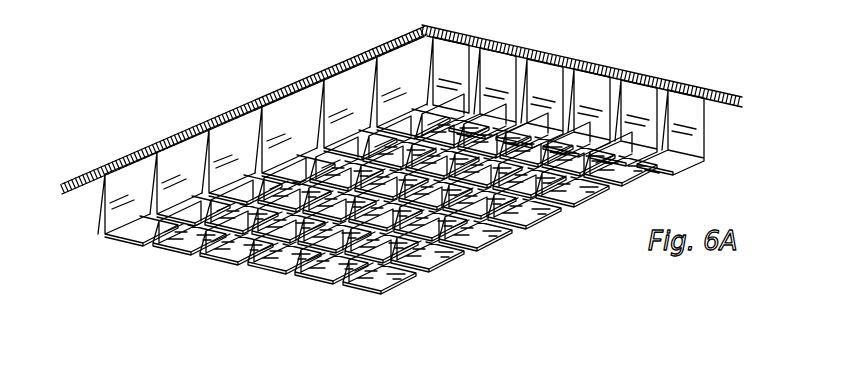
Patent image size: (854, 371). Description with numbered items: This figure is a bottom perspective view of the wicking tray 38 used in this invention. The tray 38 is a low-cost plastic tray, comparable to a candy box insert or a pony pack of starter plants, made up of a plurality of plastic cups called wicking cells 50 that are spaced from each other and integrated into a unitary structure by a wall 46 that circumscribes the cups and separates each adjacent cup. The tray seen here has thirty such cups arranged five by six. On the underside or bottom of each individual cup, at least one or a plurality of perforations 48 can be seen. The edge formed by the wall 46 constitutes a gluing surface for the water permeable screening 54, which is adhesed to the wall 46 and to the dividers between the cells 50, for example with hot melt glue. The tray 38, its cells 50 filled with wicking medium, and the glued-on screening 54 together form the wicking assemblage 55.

The wicking tray 38 is at (394, 157).
The wall 46 is at (241, 133).
The perforations 48 is at (219, 256).
The wicking cells 50 is at (112, 203).
The water permeable media 54 is at (238, 106).
The wicking assemblage 55 is at (689, 169).